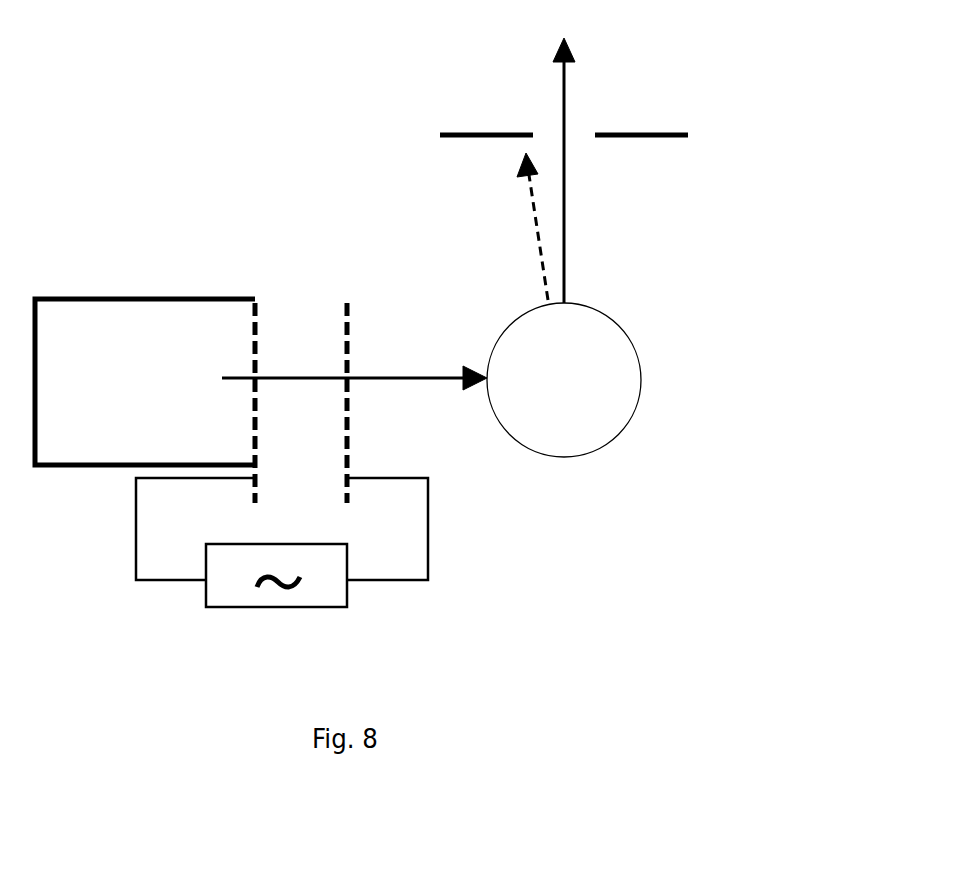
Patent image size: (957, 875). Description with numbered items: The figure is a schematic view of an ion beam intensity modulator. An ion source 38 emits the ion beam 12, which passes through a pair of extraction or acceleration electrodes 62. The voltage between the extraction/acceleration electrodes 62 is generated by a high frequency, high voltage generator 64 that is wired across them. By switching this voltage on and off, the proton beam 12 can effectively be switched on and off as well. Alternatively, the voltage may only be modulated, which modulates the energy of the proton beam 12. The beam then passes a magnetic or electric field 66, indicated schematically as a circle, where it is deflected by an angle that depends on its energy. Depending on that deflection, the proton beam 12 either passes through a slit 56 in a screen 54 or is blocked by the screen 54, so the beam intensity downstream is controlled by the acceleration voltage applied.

The ion source 38 is at (110, 325).
The extraction or acceleration electrodes 62 is at (259, 320).
The high frequency, high voltage generator 64 is at (332, 600).
The ion beam 12 is at (402, 383).
The magnetic or electric field 66 is at (572, 435).
The screen 54 is at (470, 133).
The slit 56 is at (552, 134).